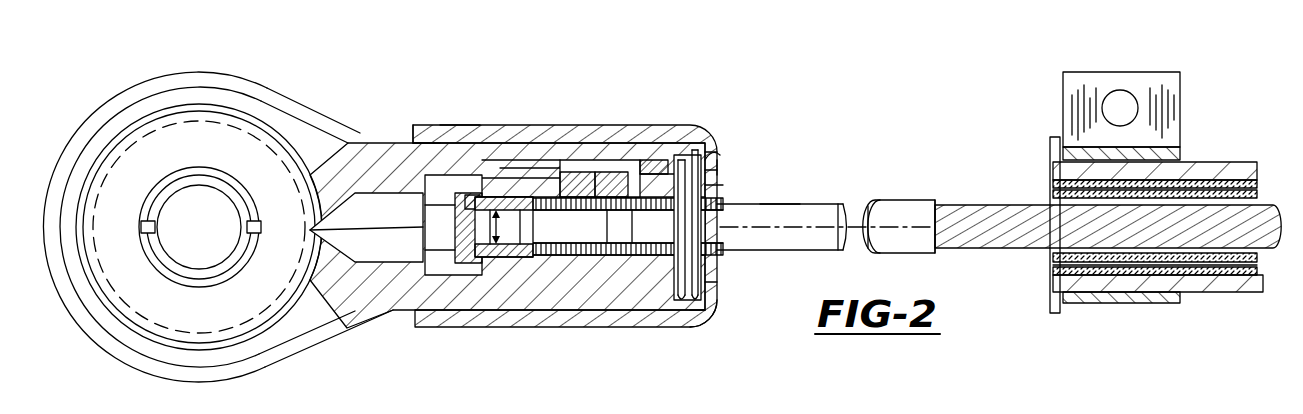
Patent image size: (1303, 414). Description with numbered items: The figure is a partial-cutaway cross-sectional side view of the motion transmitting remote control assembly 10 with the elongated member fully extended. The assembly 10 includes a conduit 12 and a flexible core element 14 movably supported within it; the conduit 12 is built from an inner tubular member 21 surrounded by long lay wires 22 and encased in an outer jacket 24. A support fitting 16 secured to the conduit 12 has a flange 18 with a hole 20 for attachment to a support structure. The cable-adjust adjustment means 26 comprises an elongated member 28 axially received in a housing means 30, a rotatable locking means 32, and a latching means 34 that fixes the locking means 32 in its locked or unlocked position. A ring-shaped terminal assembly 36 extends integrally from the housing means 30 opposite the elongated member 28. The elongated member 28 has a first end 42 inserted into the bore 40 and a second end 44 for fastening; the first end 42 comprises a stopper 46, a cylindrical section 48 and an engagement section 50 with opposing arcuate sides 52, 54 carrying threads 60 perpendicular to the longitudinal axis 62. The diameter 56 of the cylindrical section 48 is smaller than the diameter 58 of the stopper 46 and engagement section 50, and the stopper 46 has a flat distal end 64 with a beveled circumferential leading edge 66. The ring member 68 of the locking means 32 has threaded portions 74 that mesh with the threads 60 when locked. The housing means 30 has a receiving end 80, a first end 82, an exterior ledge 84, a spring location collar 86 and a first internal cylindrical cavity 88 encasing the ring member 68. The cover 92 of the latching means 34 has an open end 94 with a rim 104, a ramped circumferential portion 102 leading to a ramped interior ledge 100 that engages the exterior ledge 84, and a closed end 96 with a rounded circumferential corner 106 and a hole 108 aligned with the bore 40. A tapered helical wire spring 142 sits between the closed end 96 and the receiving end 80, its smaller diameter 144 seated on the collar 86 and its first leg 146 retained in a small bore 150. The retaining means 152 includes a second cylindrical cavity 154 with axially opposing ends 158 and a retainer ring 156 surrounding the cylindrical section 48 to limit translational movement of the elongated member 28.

The motion transmitting remote control assembly 10 is at (93, 91).
The conduit 12 is at (1208, 298).
The core element 14 is at (1262, 207).
The support fitting 16 is at (1190, 140).
The flange 18 is at (1183, 103).
The hole 20 is at (1118, 97).
The inner tubular member 21 is at (1052, 258).
The long lay wires 22 is at (1080, 184).
The outer jacket 24 is at (1077, 275).
The adjustment means 26 is at (712, 332).
The elongated member 28 is at (885, 196).
The housing means 30 is at (388, 311).
The locking means 32 is at (606, 140).
The latching means 34 is at (706, 140).
The terminal assembly 36 is at (100, 356).
The bore 40 is at (390, 170).
The first end 42 is at (312, 212).
The second end 44 is at (937, 202).
The stopper 46 is at (476, 175).
The cylindrical section 48 is at (532, 280).
The engagement section 50 is at (575, 183).
The arcuate side 52 is at (622, 185).
The arcuate side 54 is at (603, 305).
The diameter 56 is at (505, 222).
The diameter 58 is at (635, 224).
The threads 60 is at (717, 175).
The longitudinal axis 62 is at (790, 242).
The distal end 64 is at (448, 238).
The beveled circumferential leading edge 66 is at (322, 257).
The ring member 68 is at (580, 326).
The threaded portions 74 is at (556, 140).
The receiving end 80 is at (700, 160).
The first end 82 is at (360, 132).
The exterior ledge 84 is at (502, 137).
The spring location collar 86 is at (705, 282).
The first internal cylindrical cavity 88 is at (510, 165).
The cover 92 is at (717, 167).
The open end 94 is at (407, 137).
The closed end 96 is at (722, 185).
The ramped interior ledge 100 is at (503, 148).
The ramped circumferential portion 102 is at (460, 150).
The rim 104 is at (416, 137).
The rounded circumferential corner 106 is at (707, 153).
The hole 108 is at (767, 200).
The helical wire spring 142 is at (720, 170).
The smaller diameter 144 is at (693, 318).
The first leg 146 is at (712, 132).
The small bore 150 is at (694, 150).
The retaining means 152 is at (443, 221).
The second cylindrical cavity 154 is at (425, 313).
The retainer ring 156 is at (488, 290).
The axially opposing ends 158 is at (448, 280).